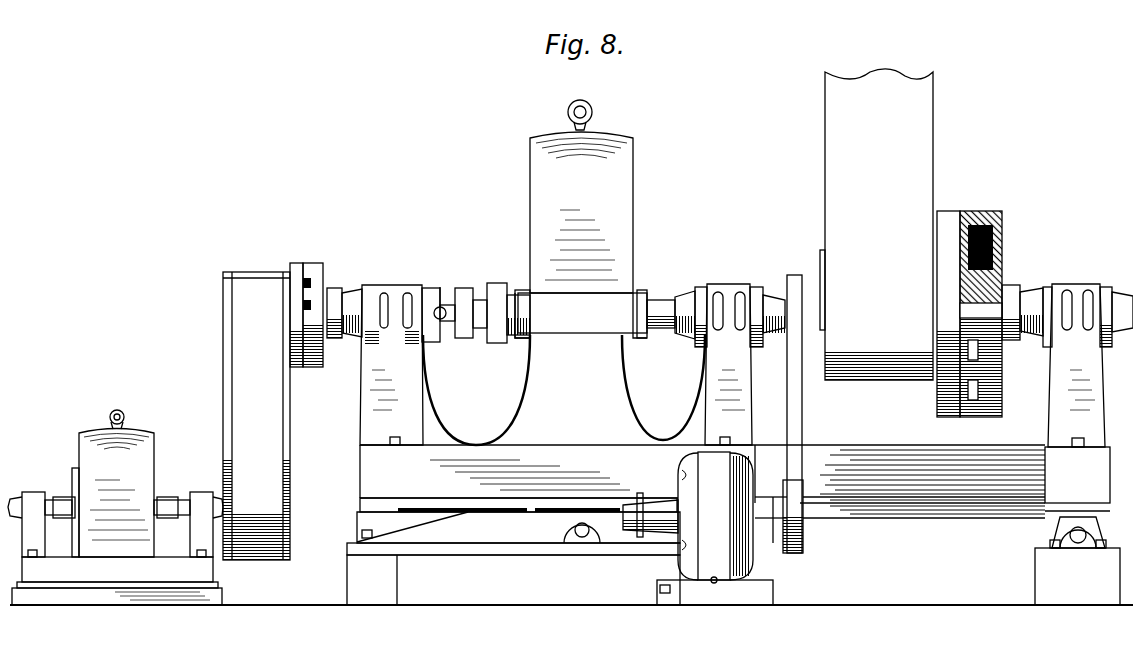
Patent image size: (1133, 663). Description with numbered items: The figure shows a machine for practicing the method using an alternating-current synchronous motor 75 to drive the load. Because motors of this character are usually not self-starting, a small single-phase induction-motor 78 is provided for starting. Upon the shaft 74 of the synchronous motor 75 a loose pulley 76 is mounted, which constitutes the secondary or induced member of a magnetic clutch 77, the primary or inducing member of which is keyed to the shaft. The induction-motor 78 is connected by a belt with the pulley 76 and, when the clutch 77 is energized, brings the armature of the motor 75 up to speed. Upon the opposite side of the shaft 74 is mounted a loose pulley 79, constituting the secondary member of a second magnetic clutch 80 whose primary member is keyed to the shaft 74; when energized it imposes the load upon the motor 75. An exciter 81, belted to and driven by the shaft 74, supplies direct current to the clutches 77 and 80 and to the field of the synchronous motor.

The shaft 74 is at (660, 302).
The alternating-current synchronous motor 75 is at (634, 144).
The loose pulley 76 is at (294, 262).
The magnetic clutch 77 is at (315, 262).
The single-phase induction-motor 78 is at (137, 430).
The loose pulley 79 is at (945, 218).
The magnetic clutch 80 is at (985, 210).
The exciter 81 is at (698, 528).